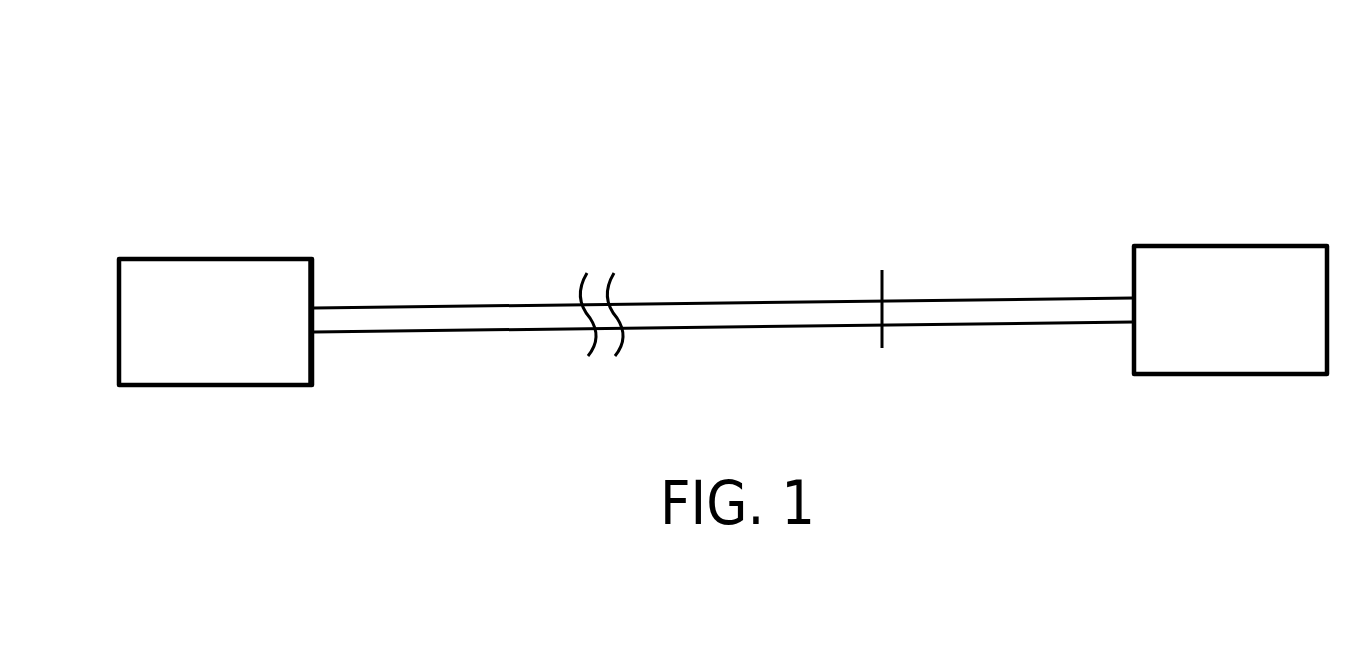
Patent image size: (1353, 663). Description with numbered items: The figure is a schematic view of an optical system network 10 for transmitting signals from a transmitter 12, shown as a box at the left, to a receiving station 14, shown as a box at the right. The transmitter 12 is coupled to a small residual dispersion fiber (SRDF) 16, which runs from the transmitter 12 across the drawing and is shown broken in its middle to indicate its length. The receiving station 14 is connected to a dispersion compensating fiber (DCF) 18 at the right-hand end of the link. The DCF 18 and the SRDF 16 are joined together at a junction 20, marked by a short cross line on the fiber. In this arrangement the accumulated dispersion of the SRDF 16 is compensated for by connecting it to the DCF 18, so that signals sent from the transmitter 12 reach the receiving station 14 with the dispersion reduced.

The optical system network 10 is at (507, 55).
The transmitter 12 is at (277, 257).
The receiving station 14 is at (1286, 244).
The small residual dispersion fiber 16 is at (424, 305).
The dispersion compensating fiber 18 is at (952, 327).
The junction 20 is at (886, 282).